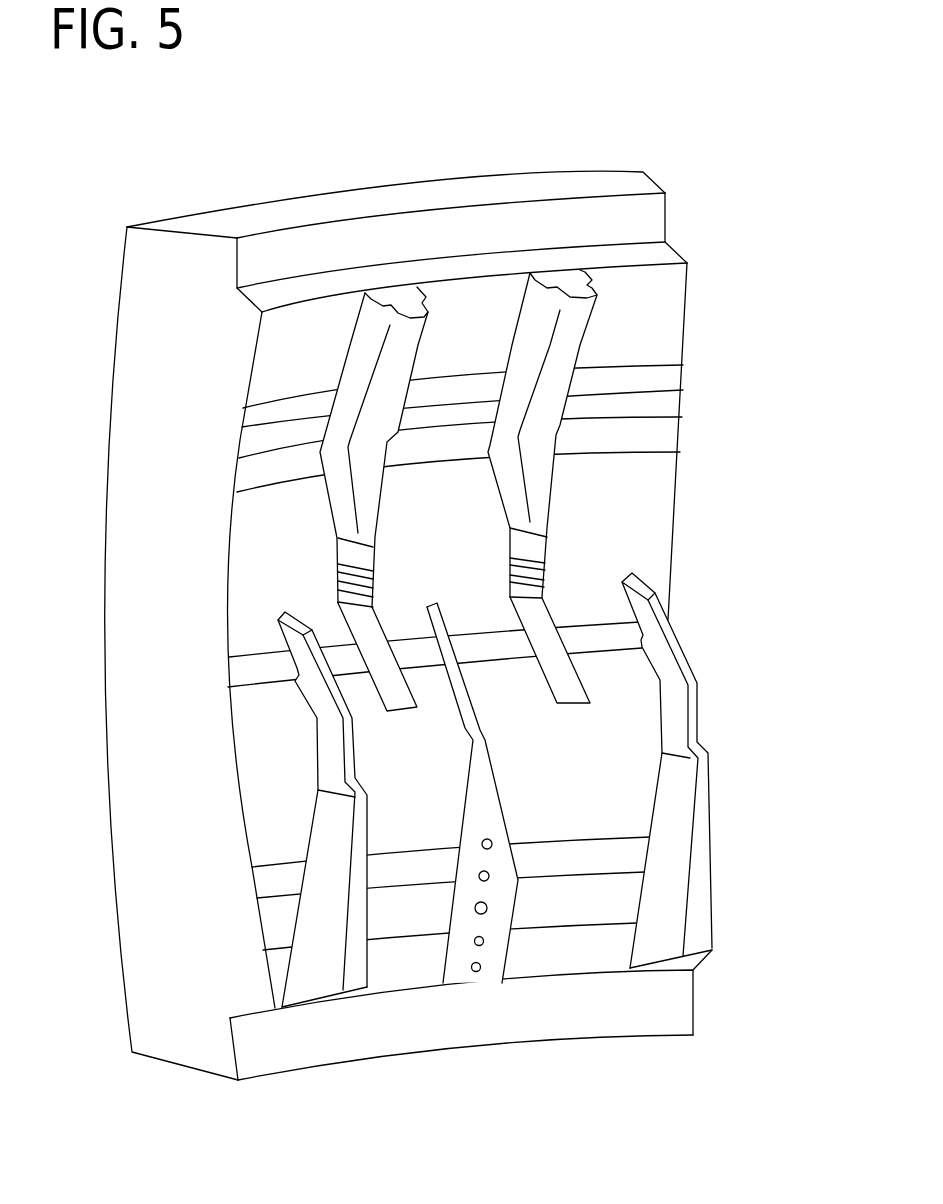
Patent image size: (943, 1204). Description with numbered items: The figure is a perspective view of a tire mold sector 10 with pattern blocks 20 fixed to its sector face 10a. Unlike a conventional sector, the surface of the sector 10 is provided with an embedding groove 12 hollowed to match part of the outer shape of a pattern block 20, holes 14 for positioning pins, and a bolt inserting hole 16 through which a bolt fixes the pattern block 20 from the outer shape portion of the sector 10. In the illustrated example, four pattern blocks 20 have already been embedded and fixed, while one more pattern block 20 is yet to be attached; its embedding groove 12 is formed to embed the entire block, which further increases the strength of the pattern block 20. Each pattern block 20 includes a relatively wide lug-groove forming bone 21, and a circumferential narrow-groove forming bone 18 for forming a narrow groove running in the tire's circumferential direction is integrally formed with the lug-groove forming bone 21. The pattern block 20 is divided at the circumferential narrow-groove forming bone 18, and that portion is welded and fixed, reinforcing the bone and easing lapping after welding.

The sector 10 is at (444, 625).
The sector face 10a is at (643, 537).
The embedding groove 12 is at (503, 960).
The holes for positioning pins 14 is at (493, 838).
The bolt inserting hole 16 is at (478, 914).
The circumferential narrow-groove forming bone 18 is at (658, 405).
The pattern block 20 is at (550, 638).
The lug-groove forming bone 21 is at (563, 353).